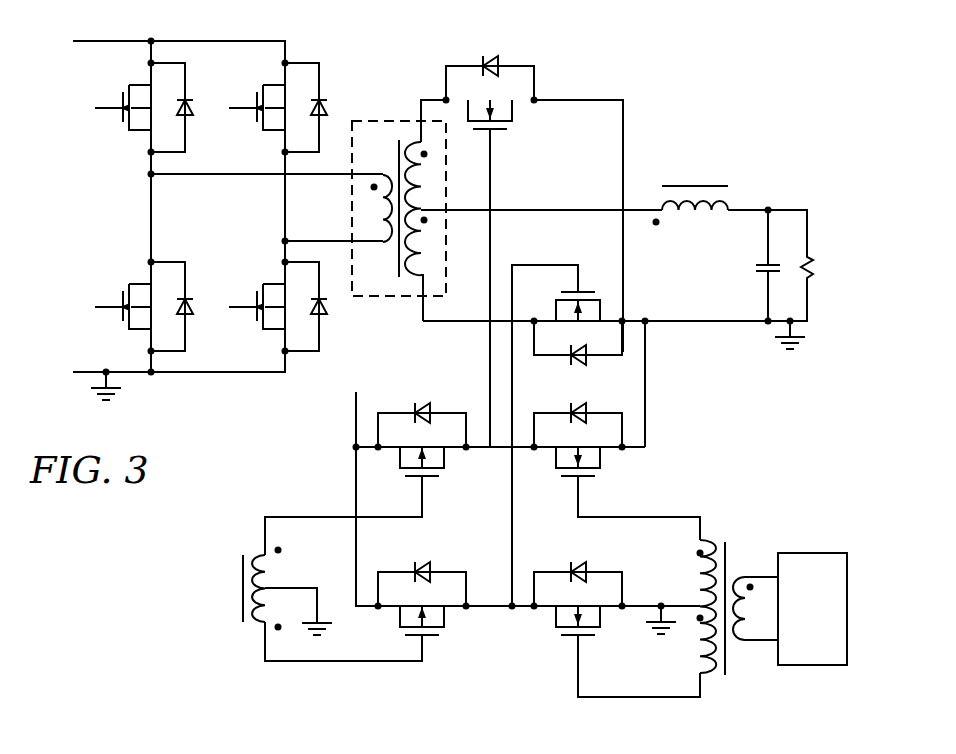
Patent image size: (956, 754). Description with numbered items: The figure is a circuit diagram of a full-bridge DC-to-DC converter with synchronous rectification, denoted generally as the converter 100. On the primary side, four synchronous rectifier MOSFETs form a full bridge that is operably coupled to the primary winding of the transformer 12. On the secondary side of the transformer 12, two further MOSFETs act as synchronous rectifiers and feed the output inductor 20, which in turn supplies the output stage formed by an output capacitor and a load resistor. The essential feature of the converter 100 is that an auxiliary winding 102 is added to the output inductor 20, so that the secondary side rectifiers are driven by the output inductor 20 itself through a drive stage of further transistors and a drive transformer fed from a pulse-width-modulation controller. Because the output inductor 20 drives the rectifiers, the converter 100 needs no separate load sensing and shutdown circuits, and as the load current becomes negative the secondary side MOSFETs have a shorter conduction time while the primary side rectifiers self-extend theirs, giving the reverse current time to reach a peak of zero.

The full-bridge converter with synchronous rectification 100 is at (645, 62).
The transformer 12 is at (398, 121).
The output inductor 20 is at (732, 205).
The auxiliary winding 102 is at (265, 553).